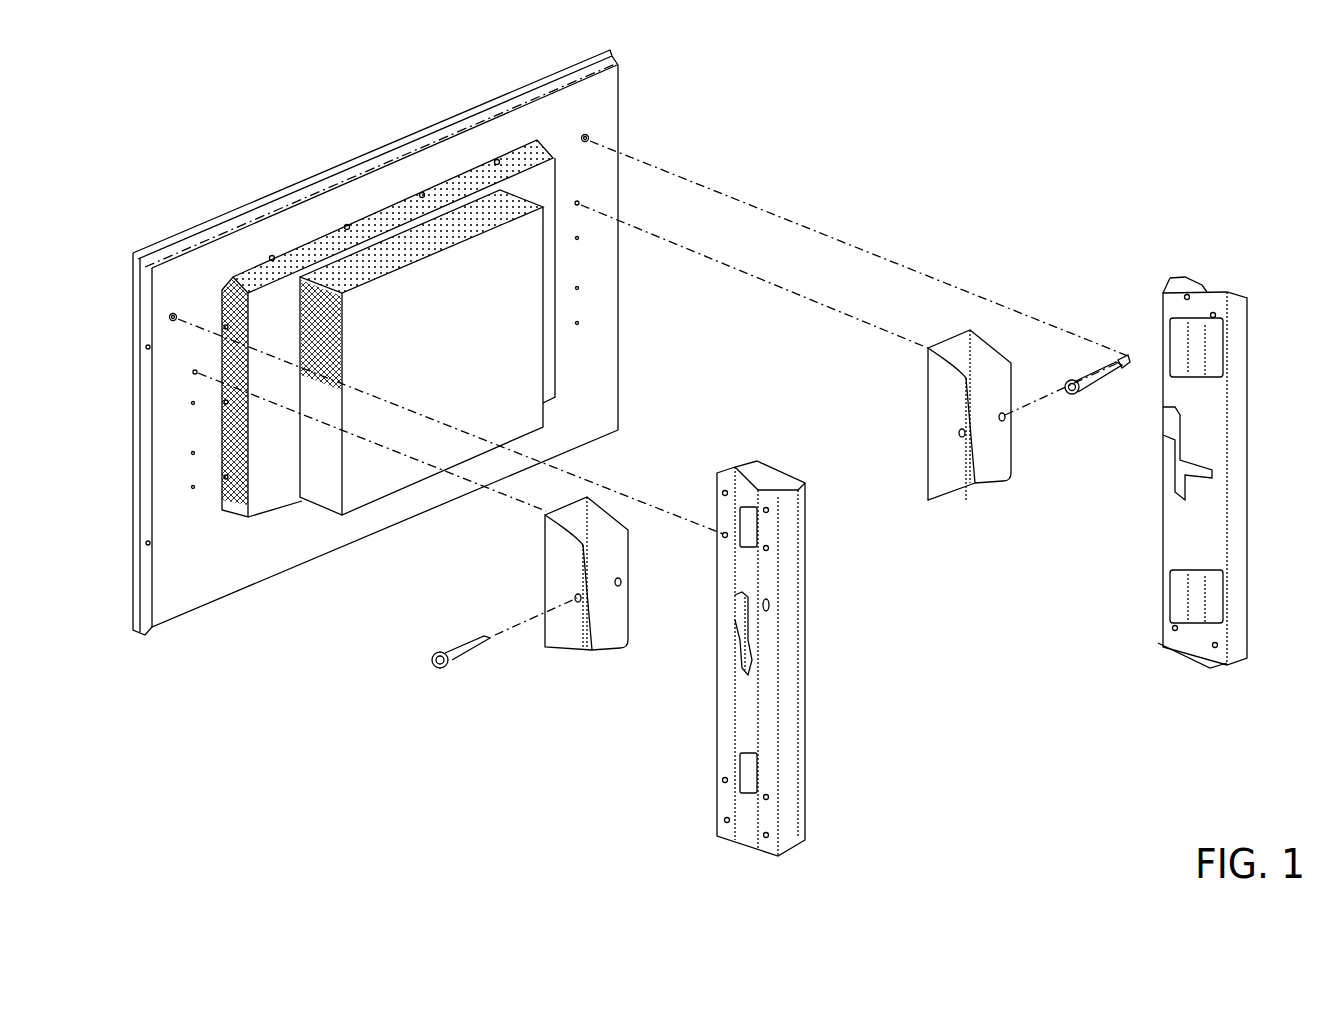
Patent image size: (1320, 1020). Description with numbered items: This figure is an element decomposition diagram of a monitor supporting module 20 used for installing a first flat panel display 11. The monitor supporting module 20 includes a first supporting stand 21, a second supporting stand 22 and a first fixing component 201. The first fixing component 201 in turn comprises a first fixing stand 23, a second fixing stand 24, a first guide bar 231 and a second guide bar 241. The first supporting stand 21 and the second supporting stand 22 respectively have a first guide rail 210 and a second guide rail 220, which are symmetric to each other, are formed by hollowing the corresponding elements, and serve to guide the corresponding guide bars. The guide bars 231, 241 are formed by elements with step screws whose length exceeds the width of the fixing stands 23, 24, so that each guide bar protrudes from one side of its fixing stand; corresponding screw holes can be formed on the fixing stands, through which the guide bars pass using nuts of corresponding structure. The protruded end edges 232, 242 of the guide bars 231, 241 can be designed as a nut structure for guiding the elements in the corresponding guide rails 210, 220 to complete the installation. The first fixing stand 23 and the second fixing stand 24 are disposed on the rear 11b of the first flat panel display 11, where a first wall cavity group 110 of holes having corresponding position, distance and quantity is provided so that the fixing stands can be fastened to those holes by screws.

The first flat panel display 11 is at (487, 102).
The rear of the first flat panel display 11b is at (600, 102).
The first wall cavity group 110 is at (577, 203).
The monitor supporting module 20 is at (502, 850).
The first fixing component 201 is at (458, 748).
The first supporting stand 21 is at (1240, 637).
The first guide rail 210 is at (1163, 452).
The second supporting stand 22 is at (717, 793).
The second guide rail 220 is at (742, 608).
The first fixing stand 23 is at (928, 425).
The first guide bar 231 is at (1077, 372).
The protruded end edge of the first guide bar 232 is at (1143, 331).
The second fixing stand 24 is at (572, 648).
The second guide bar 241 is at (473, 647).
The protruded end edge of the second guide bar 242 is at (430, 642).